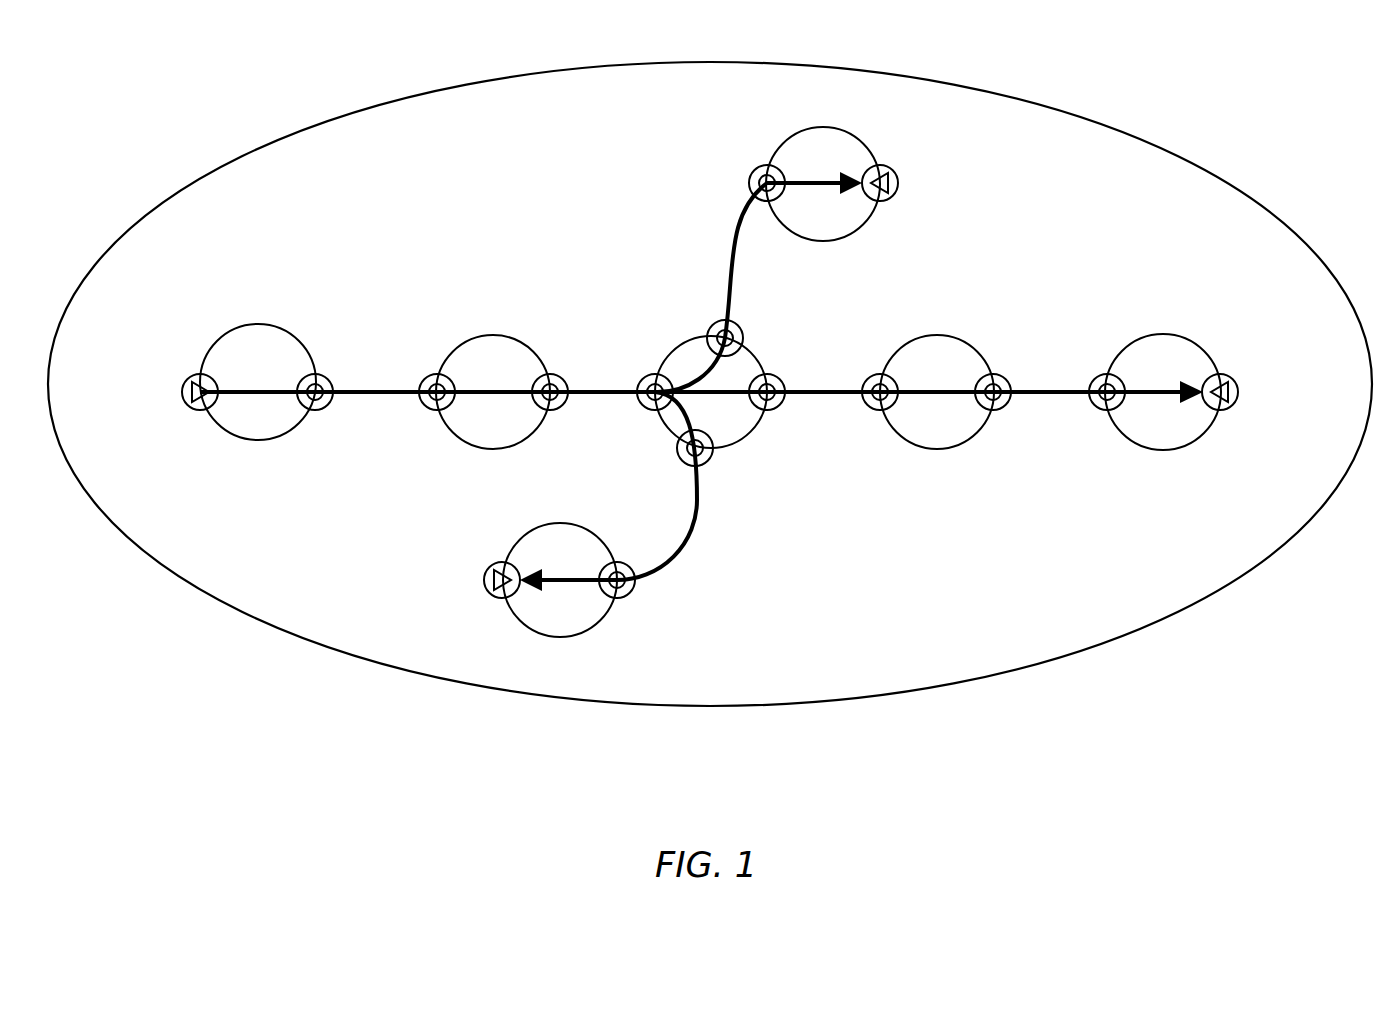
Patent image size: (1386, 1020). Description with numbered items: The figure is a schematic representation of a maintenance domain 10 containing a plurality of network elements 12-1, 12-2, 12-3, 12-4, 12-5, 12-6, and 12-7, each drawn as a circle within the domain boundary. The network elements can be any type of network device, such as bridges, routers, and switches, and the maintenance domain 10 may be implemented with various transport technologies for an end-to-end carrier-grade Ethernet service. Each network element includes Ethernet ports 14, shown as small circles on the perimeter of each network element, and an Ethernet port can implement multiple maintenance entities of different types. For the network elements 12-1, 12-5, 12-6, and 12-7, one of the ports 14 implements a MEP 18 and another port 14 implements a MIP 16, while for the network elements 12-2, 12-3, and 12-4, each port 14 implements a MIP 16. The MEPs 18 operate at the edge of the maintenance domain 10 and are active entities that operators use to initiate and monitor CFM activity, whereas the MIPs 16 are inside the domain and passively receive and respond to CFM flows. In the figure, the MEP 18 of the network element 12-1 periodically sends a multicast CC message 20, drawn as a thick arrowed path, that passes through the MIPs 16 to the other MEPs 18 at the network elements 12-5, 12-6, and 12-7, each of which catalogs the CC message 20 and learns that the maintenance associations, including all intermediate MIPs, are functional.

The maintenance domain 10 is at (1162, 132).
The network element 12-1 is at (270, 323).
The network element 12-2 is at (503, 330).
The network element 12-3 is at (745, 440).
The network element 12-4 is at (947, 335).
The network element 12-5 is at (1157, 450).
The network element 12-6 is at (520, 537).
The network element 12-7 is at (797, 132).
The Ethernet port 14 is at (192, 373).
The MIP 16 is at (318, 398).
The MEP 18 is at (187, 398).
The CC message 20 is at (253, 393).